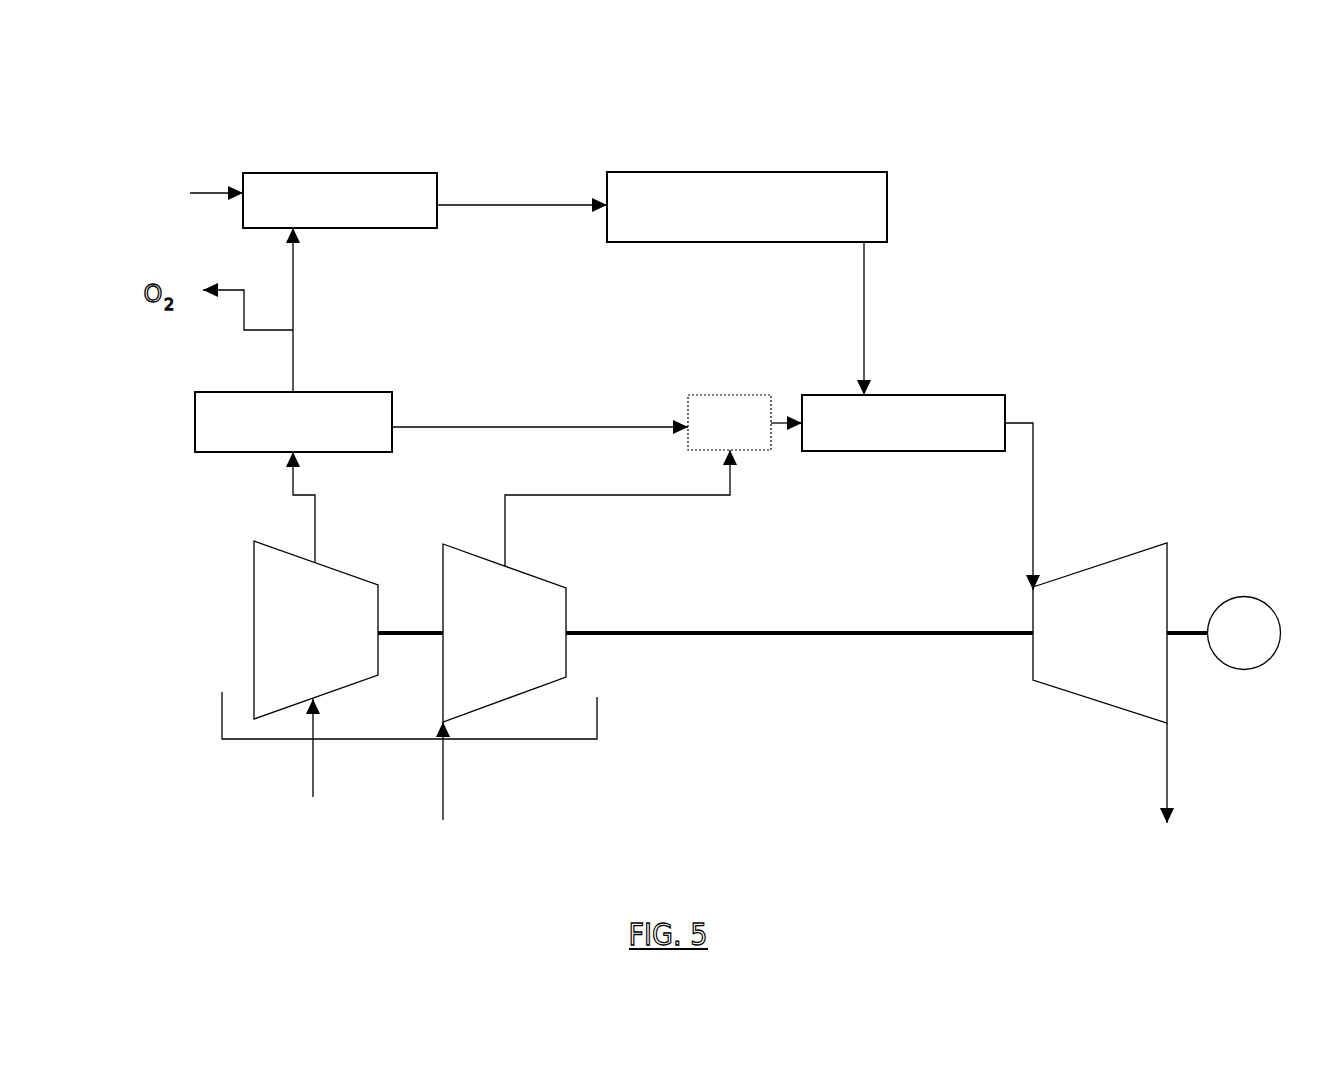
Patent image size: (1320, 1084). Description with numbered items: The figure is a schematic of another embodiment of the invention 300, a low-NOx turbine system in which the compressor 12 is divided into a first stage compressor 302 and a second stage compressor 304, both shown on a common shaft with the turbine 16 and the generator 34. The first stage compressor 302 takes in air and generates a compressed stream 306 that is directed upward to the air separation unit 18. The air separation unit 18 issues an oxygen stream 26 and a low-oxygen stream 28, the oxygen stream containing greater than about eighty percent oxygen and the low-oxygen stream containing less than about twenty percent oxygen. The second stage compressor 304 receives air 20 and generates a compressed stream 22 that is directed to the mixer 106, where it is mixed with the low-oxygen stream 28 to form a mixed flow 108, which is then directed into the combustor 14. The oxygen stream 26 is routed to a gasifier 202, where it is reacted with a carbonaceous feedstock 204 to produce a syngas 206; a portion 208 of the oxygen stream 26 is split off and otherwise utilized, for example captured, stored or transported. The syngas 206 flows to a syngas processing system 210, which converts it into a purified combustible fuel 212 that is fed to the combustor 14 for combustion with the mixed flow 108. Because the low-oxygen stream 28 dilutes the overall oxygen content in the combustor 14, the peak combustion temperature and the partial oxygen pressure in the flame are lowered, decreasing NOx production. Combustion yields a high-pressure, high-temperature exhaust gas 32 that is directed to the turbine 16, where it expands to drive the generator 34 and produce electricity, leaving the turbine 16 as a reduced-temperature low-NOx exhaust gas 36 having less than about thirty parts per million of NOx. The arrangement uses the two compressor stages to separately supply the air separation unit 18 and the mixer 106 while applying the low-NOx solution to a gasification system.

The embodiment of the invention 300 is at (173, 78).
The carbonaceous feedstock 204 is at (190, 194).
The gasifier 202 is at (311, 219).
The syngas 206 is at (522, 191).
The syngas processing system 210 is at (707, 222).
The portion of oxygen stream 208 is at (248, 295).
The oxygen stream 26 is at (312, 310).
The purified combustible fuel 212 is at (888, 318).
The mixed flow 108 is at (797, 422).
The low-oxygen stream 28 is at (540, 413).
The mixer 106 is at (708, 436).
The combustor 14 is at (885, 437).
The air separation unit 18 is at (274, 437).
The exhaust gas 32 is at (1040, 506).
The compressed stream 306 is at (274, 507).
The compressed stream 22 is at (621, 508).
The first stage compressor 302 is at (287, 646).
The second stage compressor 304 is at (479, 652).
The air 20 is at (443, 790).
The compressor 12 is at (393, 739).
The turbine 16 is at (1086, 641).
The generator 34 is at (1243, 597).
The low-NOx exhaust gas 36 is at (1171, 793).